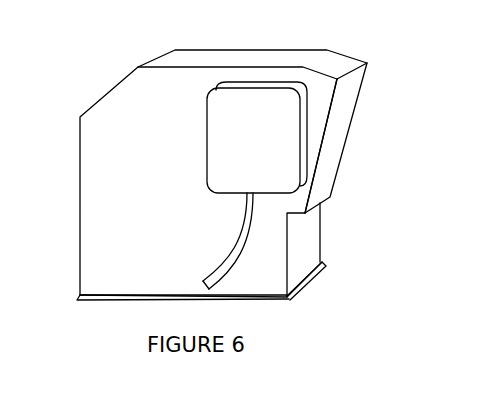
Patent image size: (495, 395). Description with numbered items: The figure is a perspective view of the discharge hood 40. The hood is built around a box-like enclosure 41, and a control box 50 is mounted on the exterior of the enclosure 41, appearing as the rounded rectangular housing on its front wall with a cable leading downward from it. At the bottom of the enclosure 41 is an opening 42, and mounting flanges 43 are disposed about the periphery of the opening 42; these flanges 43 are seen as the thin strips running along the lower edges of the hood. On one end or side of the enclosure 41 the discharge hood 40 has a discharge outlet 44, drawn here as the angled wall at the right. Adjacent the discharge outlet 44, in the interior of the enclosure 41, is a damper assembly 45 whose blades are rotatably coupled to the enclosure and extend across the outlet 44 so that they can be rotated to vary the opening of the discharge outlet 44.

The discharge hood 40 is at (125, 73).
The enclosure 41 is at (222, 50).
The opening 42 is at (290, 298).
The mounting flanges 43 is at (118, 301).
The discharge outlet 44 is at (357, 103).
The damper assembly 45 is at (335, 158).
The control box 50 is at (205, 148).